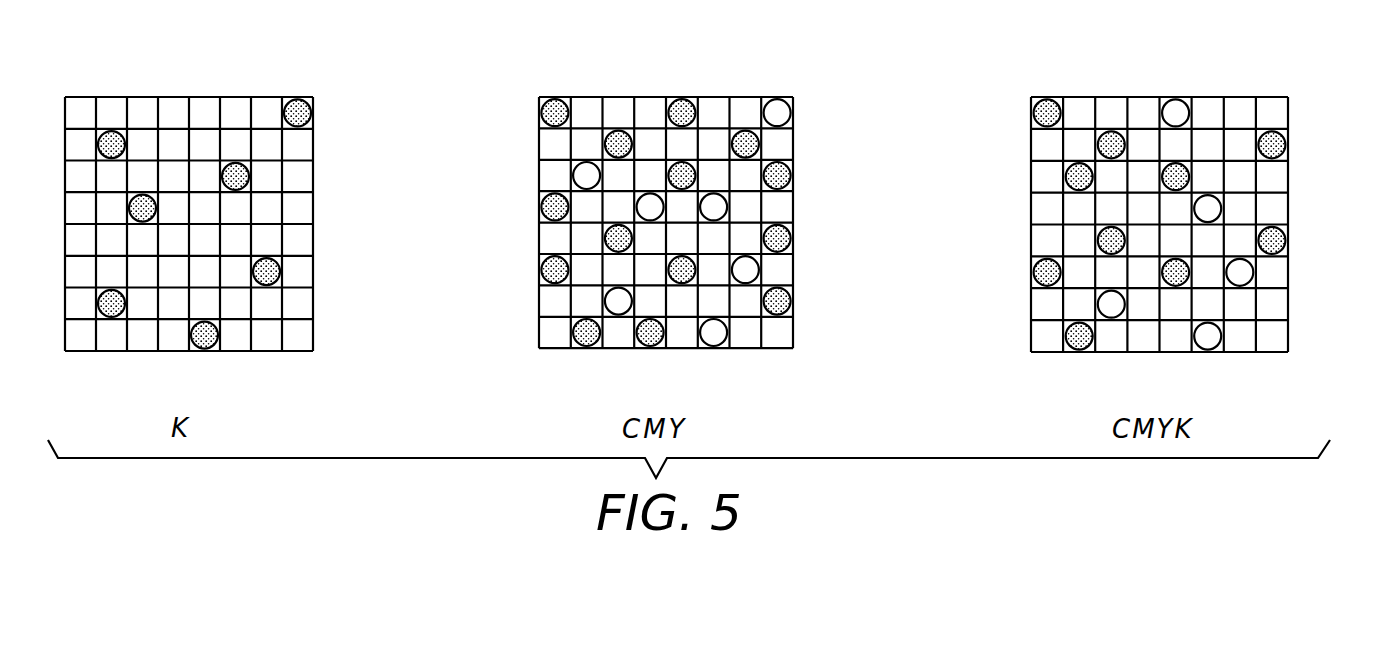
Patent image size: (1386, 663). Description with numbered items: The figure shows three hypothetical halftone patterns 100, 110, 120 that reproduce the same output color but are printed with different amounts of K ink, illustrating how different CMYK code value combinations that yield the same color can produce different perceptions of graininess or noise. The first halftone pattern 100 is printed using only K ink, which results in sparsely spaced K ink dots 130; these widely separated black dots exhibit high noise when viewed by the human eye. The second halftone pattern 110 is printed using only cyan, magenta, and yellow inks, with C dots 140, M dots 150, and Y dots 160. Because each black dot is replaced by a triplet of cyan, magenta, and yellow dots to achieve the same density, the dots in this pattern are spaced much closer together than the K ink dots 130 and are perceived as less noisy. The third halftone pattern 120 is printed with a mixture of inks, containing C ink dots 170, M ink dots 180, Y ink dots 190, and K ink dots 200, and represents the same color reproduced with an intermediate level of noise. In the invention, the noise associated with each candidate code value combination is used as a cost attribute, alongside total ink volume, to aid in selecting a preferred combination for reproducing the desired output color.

The halftone pattern 100 is at (189, 226).
The halftone pattern 110 is at (648, 227).
The halftone pattern 120 is at (1169, 228).
The K ink dots 130 is at (190, 336).
The C dots 140 is at (547, 98).
The M dots 150 is at (578, 340).
The Y dots 160 is at (715, 335).
The C ink dots 170 is at (1042, 105).
The M ink dots 180 is at (1077, 343).
The Y ink dots 190 is at (1208, 335).
The K ink dots 200 is at (1273, 153).